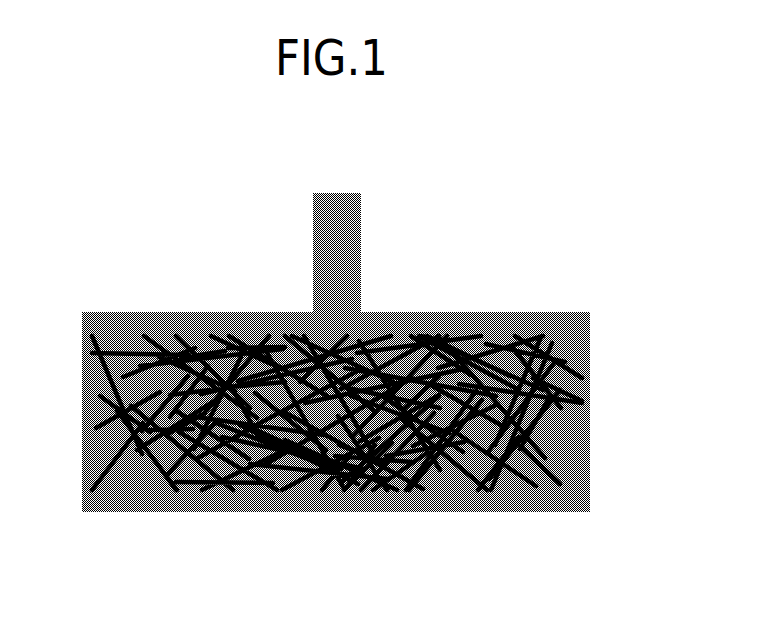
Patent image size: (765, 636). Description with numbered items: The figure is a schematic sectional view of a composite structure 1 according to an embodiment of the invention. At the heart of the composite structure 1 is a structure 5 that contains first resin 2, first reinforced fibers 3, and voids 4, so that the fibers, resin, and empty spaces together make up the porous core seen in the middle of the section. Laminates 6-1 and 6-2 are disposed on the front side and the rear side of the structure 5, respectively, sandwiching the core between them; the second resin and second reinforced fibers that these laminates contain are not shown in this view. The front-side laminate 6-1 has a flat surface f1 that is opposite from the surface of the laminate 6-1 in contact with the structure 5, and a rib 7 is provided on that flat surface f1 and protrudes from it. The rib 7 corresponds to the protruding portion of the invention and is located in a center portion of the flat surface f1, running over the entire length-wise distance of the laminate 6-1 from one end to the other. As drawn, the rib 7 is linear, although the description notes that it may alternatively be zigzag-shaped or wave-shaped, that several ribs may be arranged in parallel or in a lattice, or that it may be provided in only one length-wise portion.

The composite structure 1 is at (333, 373).
The first resin 2 is at (364, 393).
The first reinforced fibers 3 is at (553, 350).
The voids 4 is at (124, 412).
The structure 5 is at (592, 375).
The front-side laminate 6-1 is at (195, 322).
The rear-side laminate 6-2 is at (196, 497).
The rib 7 is at (330, 238).
The flat surface f1 is at (571, 312).